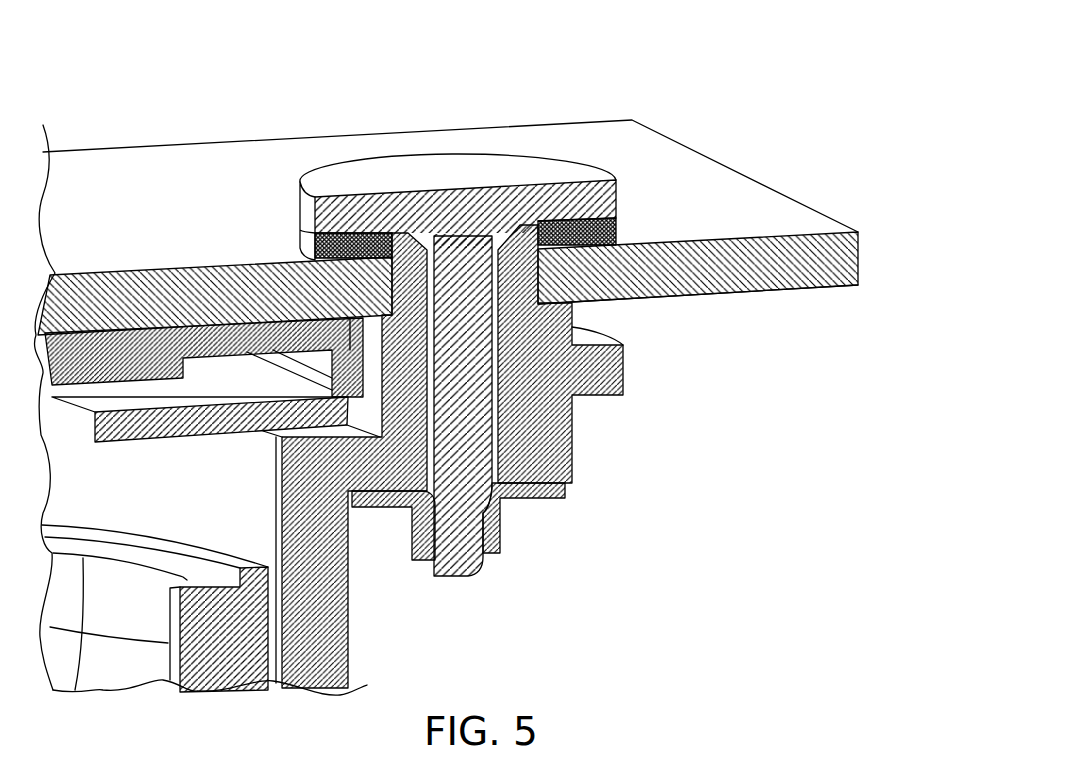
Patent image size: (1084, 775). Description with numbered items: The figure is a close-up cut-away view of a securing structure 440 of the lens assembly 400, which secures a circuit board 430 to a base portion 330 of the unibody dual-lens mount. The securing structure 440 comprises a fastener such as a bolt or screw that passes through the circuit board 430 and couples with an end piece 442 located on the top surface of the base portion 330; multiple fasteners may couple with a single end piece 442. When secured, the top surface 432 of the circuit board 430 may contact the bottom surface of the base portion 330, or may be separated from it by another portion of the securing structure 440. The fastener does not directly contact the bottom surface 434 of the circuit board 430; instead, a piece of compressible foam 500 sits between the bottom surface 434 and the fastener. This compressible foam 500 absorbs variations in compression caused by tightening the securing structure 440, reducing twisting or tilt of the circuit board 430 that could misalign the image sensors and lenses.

The lens assembly 400 is at (134, 91).
The base portion 330 is at (625, 373).
The circuit board 430 is at (862, 262).
The top surface of the circuit board 432 is at (760, 292).
The bottom surface of the circuit board 434 is at (673, 155).
The securing structure 440 is at (628, 192).
The end piece 442 is at (565, 487).
The compressible foam 500 is at (628, 228).